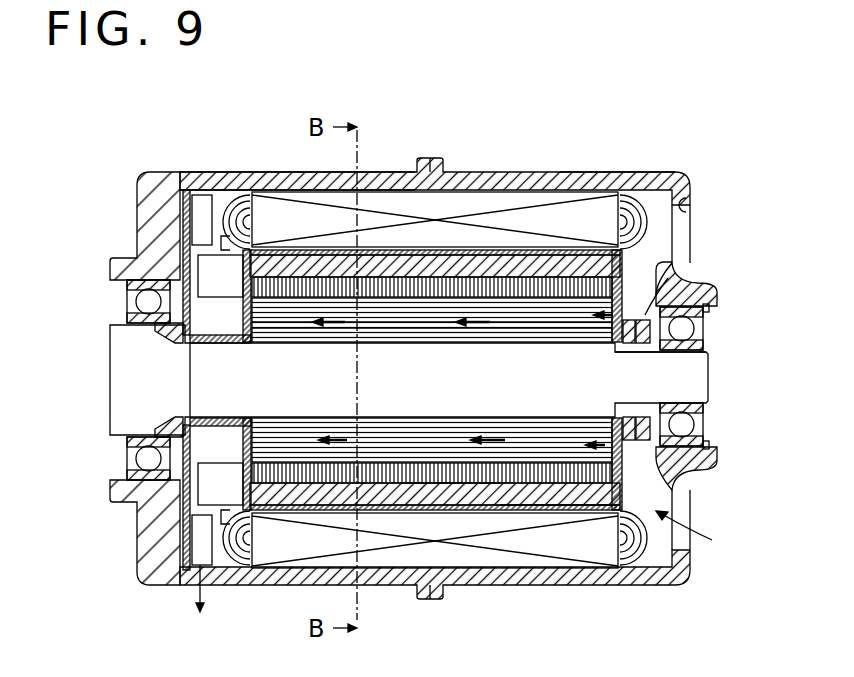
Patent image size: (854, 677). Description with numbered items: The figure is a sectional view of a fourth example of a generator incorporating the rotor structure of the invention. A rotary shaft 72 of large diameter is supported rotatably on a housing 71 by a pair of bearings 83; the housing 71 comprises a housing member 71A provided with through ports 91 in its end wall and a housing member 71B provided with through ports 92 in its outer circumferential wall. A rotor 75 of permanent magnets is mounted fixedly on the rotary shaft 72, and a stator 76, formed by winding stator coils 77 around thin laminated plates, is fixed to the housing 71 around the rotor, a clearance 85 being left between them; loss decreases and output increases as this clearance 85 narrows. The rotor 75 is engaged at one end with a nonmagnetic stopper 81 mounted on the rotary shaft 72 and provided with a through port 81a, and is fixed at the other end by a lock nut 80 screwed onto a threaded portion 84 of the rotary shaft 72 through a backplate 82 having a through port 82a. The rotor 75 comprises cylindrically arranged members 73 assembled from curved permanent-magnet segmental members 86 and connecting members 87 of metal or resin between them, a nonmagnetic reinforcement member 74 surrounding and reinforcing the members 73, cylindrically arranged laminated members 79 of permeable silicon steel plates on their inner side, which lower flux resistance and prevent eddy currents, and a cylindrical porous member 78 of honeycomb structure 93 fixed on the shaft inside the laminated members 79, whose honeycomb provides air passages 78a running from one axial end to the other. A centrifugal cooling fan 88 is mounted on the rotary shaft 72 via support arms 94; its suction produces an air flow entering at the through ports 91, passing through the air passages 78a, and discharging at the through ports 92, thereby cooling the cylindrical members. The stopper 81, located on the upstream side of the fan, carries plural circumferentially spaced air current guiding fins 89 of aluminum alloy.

The housing 71 is at (507, 180).
The housing member 71A is at (592, 182).
The housing member 71B is at (300, 182).
The rotary shaft 72 is at (133, 390).
The cylindrically arranged members 73 is at (528, 265).
The reinforcement member 74 is at (470, 500).
The rotor 75 is at (622, 262).
The stator 76 is at (455, 208).
The stator coils 77 is at (636, 202).
The cylindrical porous member 78 is at (537, 328).
The air passages 78a is at (422, 322).
The cylindrically arranged laminated members 79 is at (288, 300).
The lock nut 80 is at (697, 407).
The stopper 81 is at (220, 343).
The through port 81a is at (237, 447).
The backplate 82 is at (642, 318).
The through port 82a is at (618, 443).
The bearings 83 is at (700, 343).
The threaded portion 84 is at (707, 360).
The clearance 85 is at (396, 252).
The segmental members 86 is at (523, 566).
The connecting members 87 is at (595, 577).
The cooling fan 88 is at (200, 210).
The air current guiding fins 89 is at (207, 267).
The through ports 91 is at (684, 207).
The through ports 92 is at (184, 190).
The honeycomb structure 93 is at (347, 328).
The support arms 94 is at (170, 210).